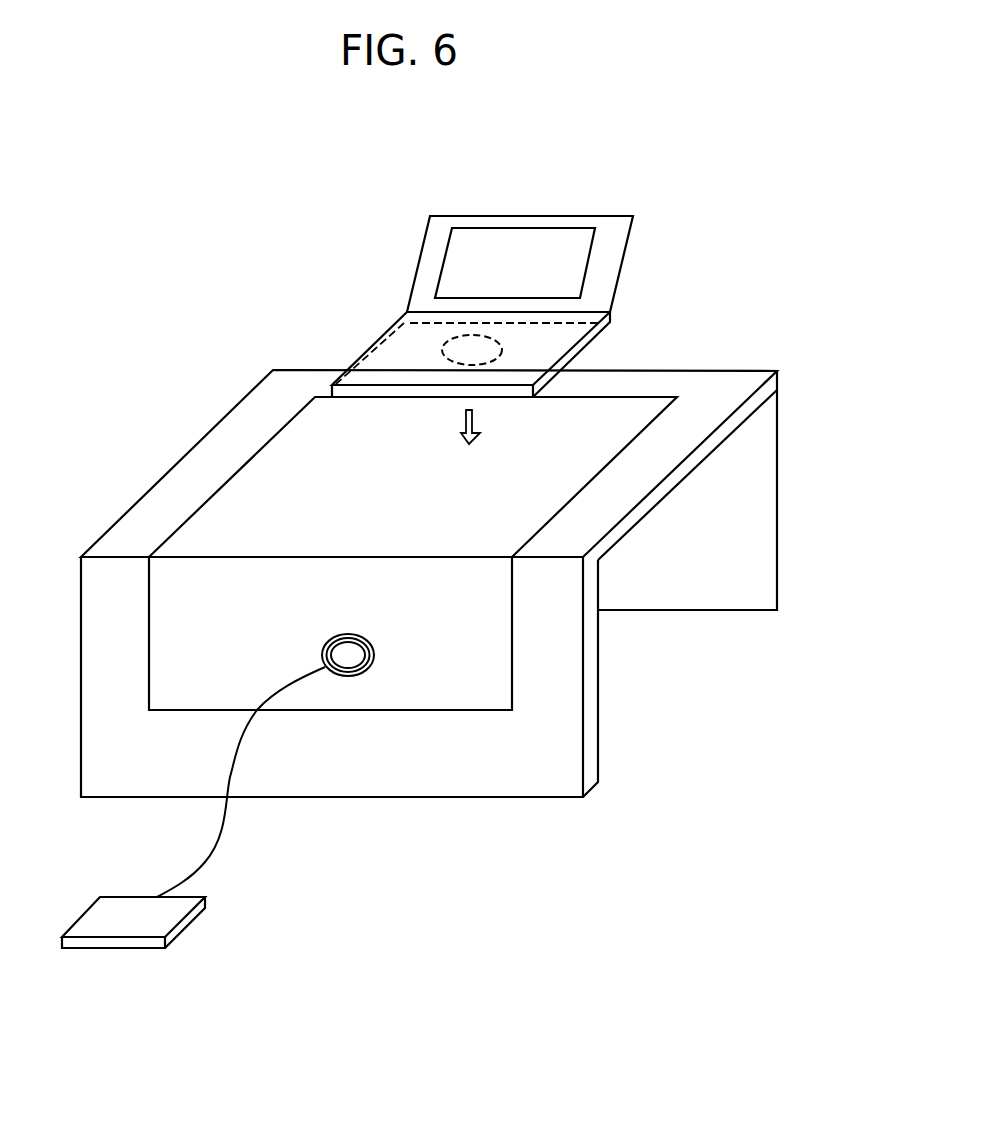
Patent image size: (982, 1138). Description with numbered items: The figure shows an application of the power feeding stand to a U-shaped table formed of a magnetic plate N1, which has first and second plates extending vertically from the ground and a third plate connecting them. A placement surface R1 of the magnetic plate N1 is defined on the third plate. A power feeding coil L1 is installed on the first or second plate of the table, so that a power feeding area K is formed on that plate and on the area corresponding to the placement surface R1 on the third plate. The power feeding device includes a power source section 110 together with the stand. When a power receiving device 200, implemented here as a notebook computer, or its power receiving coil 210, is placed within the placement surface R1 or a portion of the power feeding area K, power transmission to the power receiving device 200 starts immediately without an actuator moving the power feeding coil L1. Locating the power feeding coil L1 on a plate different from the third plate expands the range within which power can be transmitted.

The power receiving device 200 is at (587, 343).
The power receiving coil 210 is at (443, 350).
The power source section 110 is at (175, 917).
The power feeding coil L1 is at (362, 673).
The power feeding area K is at (513, 692).
The placement surface R1 is at (595, 476).
The magnetic plate N1 is at (777, 426).